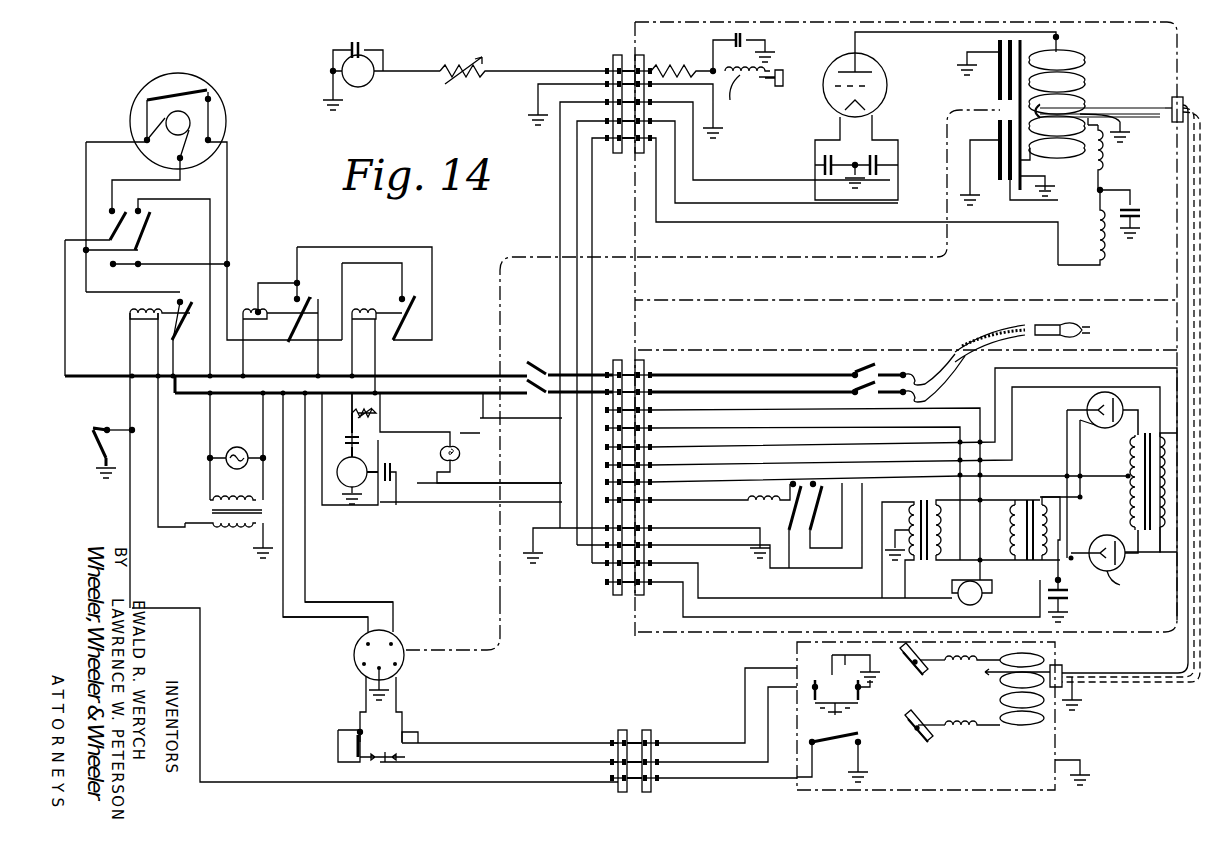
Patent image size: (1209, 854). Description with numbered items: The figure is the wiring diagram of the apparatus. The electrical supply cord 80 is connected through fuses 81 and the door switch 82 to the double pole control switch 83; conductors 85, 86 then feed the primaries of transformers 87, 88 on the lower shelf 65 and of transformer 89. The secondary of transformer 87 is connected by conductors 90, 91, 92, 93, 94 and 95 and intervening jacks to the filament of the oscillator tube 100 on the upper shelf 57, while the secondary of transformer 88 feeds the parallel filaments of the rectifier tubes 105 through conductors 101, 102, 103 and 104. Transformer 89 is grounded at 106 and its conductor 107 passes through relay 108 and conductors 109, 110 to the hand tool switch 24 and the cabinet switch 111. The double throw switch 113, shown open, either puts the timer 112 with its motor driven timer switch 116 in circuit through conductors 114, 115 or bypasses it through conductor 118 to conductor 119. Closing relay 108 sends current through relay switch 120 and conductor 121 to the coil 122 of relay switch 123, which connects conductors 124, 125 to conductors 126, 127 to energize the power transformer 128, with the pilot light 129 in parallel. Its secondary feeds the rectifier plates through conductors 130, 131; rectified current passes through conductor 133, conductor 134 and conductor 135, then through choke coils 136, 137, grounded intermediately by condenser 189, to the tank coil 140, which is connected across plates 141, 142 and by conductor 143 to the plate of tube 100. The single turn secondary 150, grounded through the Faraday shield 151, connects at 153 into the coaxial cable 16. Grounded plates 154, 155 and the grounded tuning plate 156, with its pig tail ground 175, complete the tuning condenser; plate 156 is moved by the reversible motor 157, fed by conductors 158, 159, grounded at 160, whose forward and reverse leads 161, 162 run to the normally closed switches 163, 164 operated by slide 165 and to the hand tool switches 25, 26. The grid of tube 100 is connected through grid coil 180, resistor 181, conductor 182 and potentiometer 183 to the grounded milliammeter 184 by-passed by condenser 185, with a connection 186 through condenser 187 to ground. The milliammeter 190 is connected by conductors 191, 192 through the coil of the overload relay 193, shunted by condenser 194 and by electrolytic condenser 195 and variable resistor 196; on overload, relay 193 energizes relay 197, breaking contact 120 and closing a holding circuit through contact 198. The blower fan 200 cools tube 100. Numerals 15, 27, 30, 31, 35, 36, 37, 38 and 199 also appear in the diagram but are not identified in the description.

The timer 112 is at (222, 68).
The motor driven timer switch 116 is at (212, 95).
The conductor 114 is at (140, 172).
The conductor 115 is at (152, 193).
The double throw switch 113 is at (132, 222).
The conductor 118 is at (165, 262).
The conductor 119 is at (228, 228).
The relay 108 is at (128, 308).
The parallel switch 111 is at (97, 420).
The conductor 107 is at (175, 464).
The transformer 89 is at (185, 527).
The ground 106 is at (262, 550).
The conductor 109 is at (165, 612).
The contact 198 is at (364, 293).
The relay switch 120 is at (312, 290).
The relay 197 is at (254, 305).
The relay coil 199 is at (290, 328).
The conductor 121 is at (319, 360).
The overload relay 193 is at (390, 308).
The variable resistor 196 is at (375, 413).
The electrolytic condenser 195 is at (365, 438).
The pilot light 129 is at (440, 455).
The condenser 194 is at (392, 480).
The milliammeter 190 is at (340, 490).
The conductor 158 is at (358, 604).
The conductor 159 is at (338, 625).
The motor 157 is at (420, 628).
The ground connection 160 is at (372, 684).
The forward lead 161 is at (361, 707).
The reverse lead 162 is at (400, 706).
The normally closed manually operable switch 163 is at (355, 742).
The normally closed manually operable switch 164 is at (415, 740).
The manually movable slide 165 is at (372, 770).
The condenser 185 is at (360, 40).
The milliammeter 184 is at (372, 82).
The potentiometer 183 is at (465, 83).
The conductor 182 is at (528, 70).
The resistor 181 is at (680, 55).
The connection 186 is at (720, 40).
The condenser 187 is at (752, 38).
The grid coil 180 is at (747, 94).
The oscillator tube 100 is at (888, 85).
The conductor 143 is at (945, 38).
The grounded plate 154 is at (1000, 78).
The plate 142 is at (1006, 98).
The tuning plate 156 is at (1000, 122).
The plate 141 is at (972, 137).
The grounded plate 155 is at (1000, 158).
The flexible pig tail grounding connection 175 is at (1022, 202).
The single turn secondary 150 is at (1078, 100).
The connection 153 is at (1170, 95).
The tubular Faraday shield 151 is at (1130, 140).
The tank coil 140 is at (1070, 150).
The choke coil 137 is at (1105, 165).
The condenser 189 is at (1132, 200).
The choke coil 136 is at (1110, 255).
The conductor 92 is at (722, 178).
The conductor 93 is at (778, 200).
The conductor 135 is at (695, 228).
The conductor 91 is at (558, 240).
The conductor 94 is at (578, 276).
The double pole control switch 83 is at (545, 360).
The conductor 86 is at (470, 436).
The conductor 85 is at (545, 410).
The conductor 192 is at (503, 486).
The upper shelf 57 is at (770, 310).
The lower shelf 65 is at (810, 345).
The door switch 82 is at (870, 364).
The electrical supply cord 80 is at (985, 330).
The fuses 81 is at (925, 366).
The coaxial cable 16 is at (1190, 315).
The conductor 124 is at (800, 410).
The conductor 125 is at (822, 412).
The conductor 191 is at (724, 478).
The coil 122 is at (756, 504).
The relay switch 123 is at (818, 512).
The conductor 126 is at (784, 542).
The conductor 127 is at (812, 538).
The transformer 87 is at (925, 500).
The transformer 88 is at (1020, 497).
The conductor 101 is at (1080, 492).
The conductor 103 is at (1067, 447).
The conductor 130 is at (1120, 428).
The conductor 102 is at (1132, 492).
The rectifier tube 105 is at (1118, 395).
The conductor 131 is at (1128, 550).
The conductor 133 is at (1070, 582).
The power transformer 128 is at (1152, 530).
The conductor 104 is at (1045, 562).
The blower fan 200 is at (983, 600).
The conductor 90 is at (760, 558).
The conductor 95 is at (765, 602).
The conductor 134 is at (596, 592).
The conductor 110 is at (740, 782).
The normally closed switch 26 is at (800, 680).
The normally closed switch 25 is at (862, 700).
The contact 27 is at (838, 720).
The switch 24 is at (838, 745).
The armature 37 is at (921, 668).
The armature 38 is at (921, 719).
The coil 35 is at (955, 665).
The coil 36 is at (962, 712).
The helical spring 30 is at (985, 692).
The helical spring 31 is at (1008, 720).
The probe housing 15 is at (1058, 740).